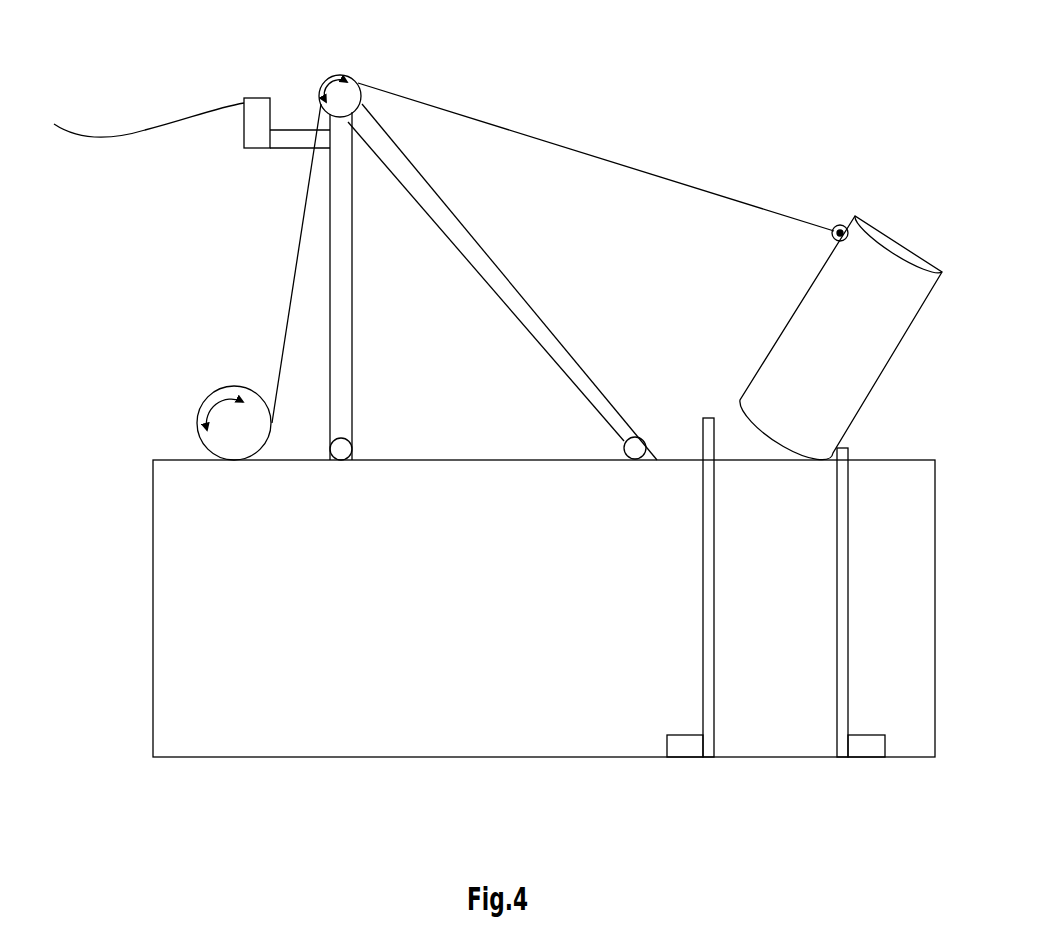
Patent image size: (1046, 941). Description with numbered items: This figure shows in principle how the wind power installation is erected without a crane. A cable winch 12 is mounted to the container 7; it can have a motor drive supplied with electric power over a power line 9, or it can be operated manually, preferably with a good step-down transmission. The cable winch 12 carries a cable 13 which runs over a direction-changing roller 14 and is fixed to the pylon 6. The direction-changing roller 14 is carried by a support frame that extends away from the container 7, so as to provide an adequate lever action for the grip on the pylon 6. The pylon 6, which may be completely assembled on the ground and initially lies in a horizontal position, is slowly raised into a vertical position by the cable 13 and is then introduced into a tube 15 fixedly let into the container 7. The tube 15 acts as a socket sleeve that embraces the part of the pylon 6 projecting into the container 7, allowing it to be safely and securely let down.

The pylon 6 is at (877, 360).
The container 7 is at (152, 627).
The power line 9 is at (129, 135).
The cable winch 12 is at (196, 419).
The cable 13 is at (288, 272).
The direction-changing roller 14 is at (357, 80).
The tube 15 is at (843, 560).